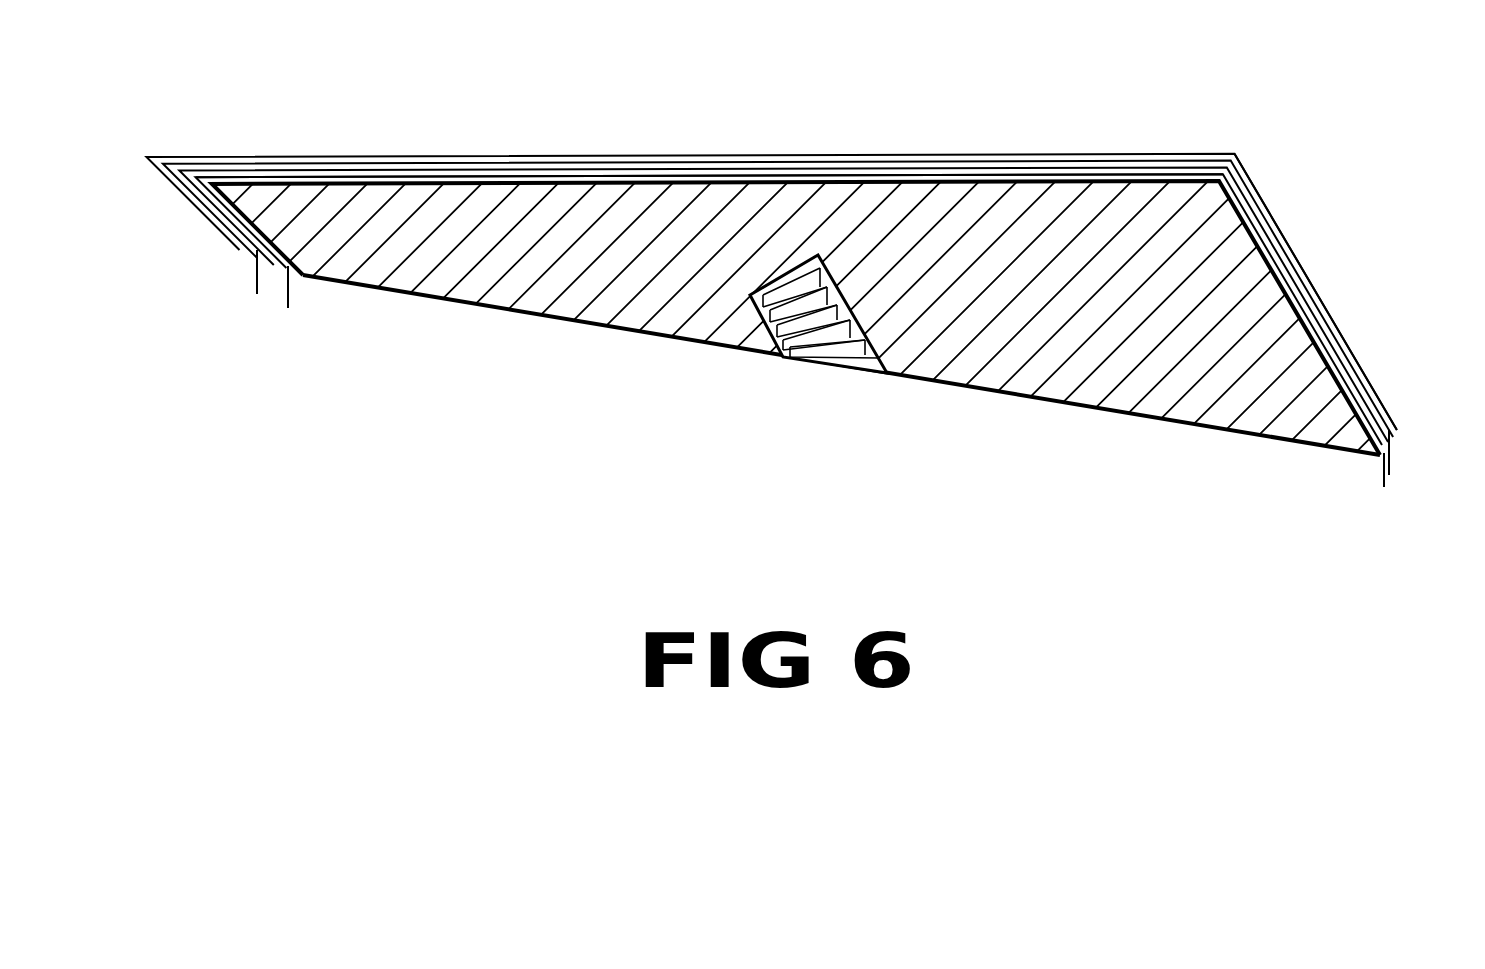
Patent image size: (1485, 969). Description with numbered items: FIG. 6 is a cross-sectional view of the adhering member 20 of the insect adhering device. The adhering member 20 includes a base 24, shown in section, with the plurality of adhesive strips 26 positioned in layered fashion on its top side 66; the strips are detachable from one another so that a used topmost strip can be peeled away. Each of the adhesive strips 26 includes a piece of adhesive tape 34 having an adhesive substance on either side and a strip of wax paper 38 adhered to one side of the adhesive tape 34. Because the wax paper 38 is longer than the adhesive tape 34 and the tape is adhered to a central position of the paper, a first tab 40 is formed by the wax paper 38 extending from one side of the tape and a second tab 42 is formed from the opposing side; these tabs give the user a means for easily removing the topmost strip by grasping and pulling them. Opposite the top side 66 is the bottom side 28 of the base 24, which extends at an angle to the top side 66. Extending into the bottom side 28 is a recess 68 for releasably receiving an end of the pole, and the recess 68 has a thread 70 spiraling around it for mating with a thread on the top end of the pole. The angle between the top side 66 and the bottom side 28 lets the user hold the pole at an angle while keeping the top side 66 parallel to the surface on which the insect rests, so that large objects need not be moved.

The adhering member 20 is at (583, 500).
The base 24 is at (422, 263).
The adhesive strips 26 is at (396, 140).
The bottom side 28 is at (503, 310).
The adhesive tape 34 is at (1267, 215).
The wax paper 38 is at (1392, 432).
The first tab 40 is at (258, 285).
The second tab 42 is at (1392, 462).
The top side 66 is at (619, 183).
The recess 68 is at (839, 377).
The thread 70 is at (843, 353).